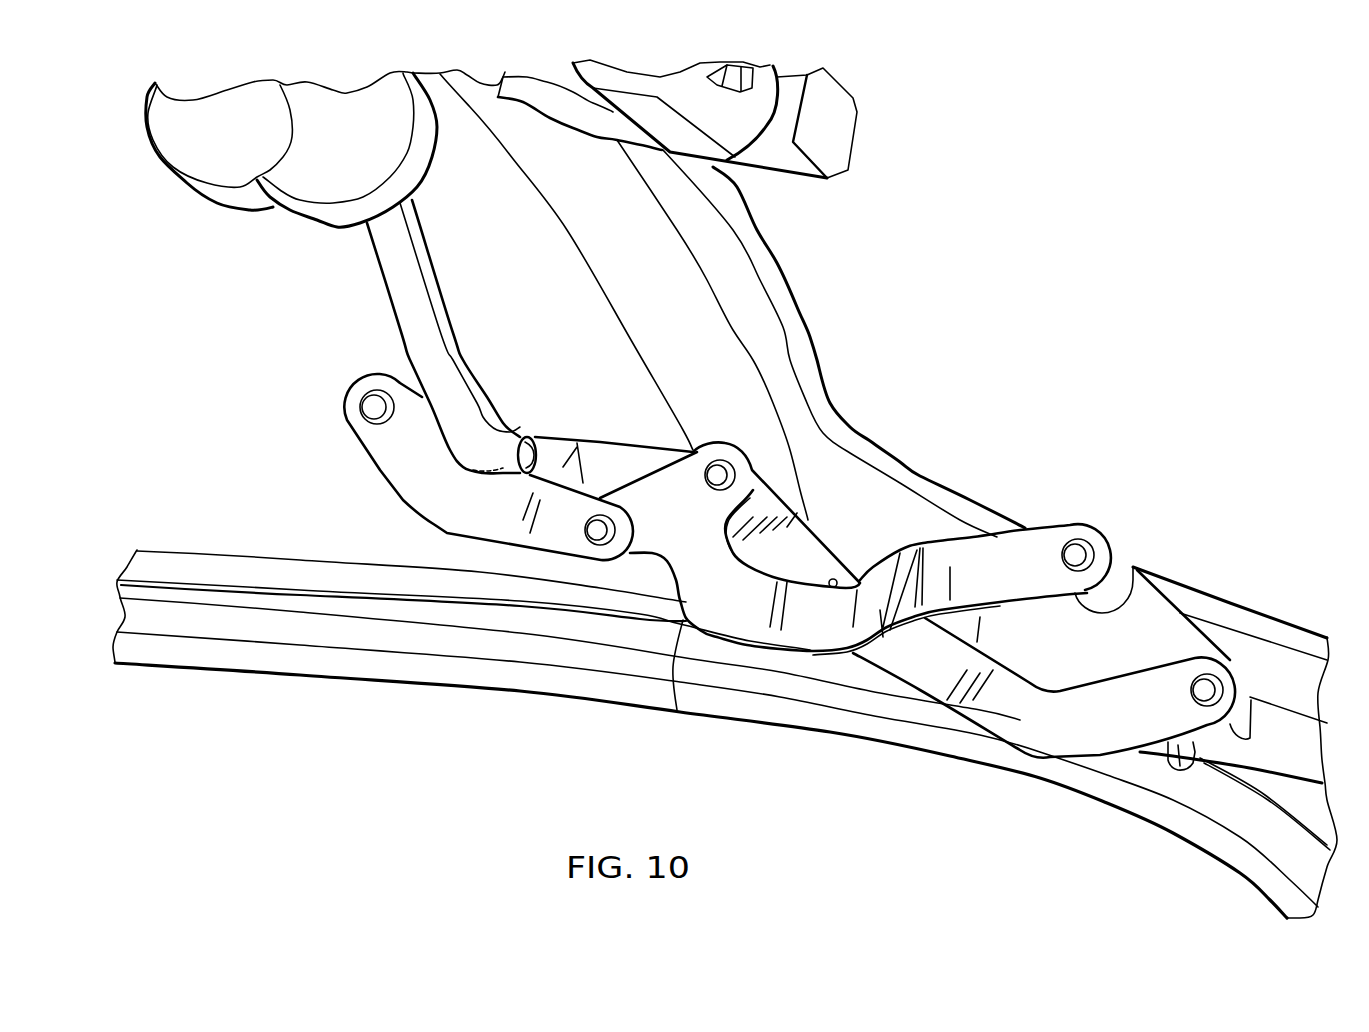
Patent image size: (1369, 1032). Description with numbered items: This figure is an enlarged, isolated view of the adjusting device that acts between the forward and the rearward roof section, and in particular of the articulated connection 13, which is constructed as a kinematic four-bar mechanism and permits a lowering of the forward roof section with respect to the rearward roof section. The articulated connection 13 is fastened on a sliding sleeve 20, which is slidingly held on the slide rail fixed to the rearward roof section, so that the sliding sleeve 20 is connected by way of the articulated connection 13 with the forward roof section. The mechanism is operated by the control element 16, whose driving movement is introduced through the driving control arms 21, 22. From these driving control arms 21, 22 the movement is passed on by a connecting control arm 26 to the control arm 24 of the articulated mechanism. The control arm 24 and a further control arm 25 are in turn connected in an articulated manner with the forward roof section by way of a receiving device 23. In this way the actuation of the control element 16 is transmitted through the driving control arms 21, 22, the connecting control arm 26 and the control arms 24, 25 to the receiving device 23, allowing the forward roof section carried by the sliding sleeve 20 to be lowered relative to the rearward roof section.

The articulated connection 13 is at (813, 660).
The control element 16 is at (320, 217).
The sliding sleeve 20 is at (1152, 752).
The driving control arm 21 is at (405, 305).
The driving control arm 22 is at (413, 378).
The receiving device 23 is at (813, 557).
The control arm 24 is at (988, 553).
The control arm 25 is at (1072, 741).
The connecting control arm 26 is at (491, 523).